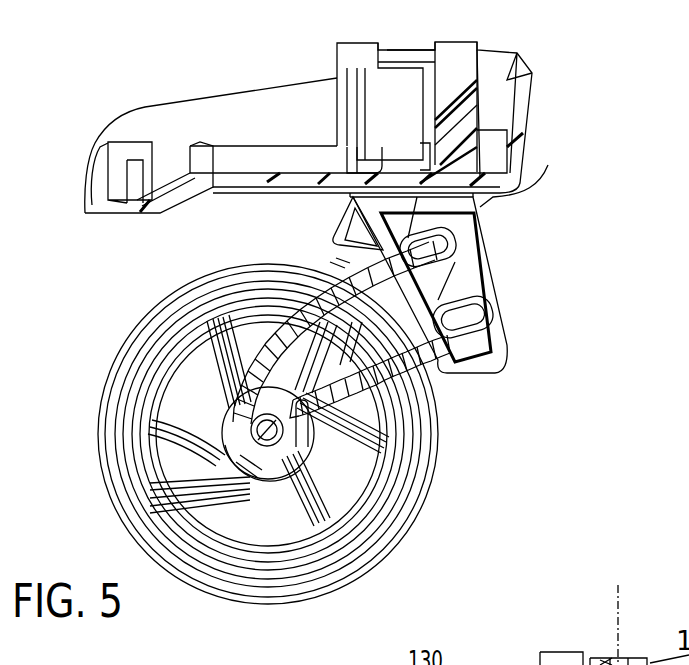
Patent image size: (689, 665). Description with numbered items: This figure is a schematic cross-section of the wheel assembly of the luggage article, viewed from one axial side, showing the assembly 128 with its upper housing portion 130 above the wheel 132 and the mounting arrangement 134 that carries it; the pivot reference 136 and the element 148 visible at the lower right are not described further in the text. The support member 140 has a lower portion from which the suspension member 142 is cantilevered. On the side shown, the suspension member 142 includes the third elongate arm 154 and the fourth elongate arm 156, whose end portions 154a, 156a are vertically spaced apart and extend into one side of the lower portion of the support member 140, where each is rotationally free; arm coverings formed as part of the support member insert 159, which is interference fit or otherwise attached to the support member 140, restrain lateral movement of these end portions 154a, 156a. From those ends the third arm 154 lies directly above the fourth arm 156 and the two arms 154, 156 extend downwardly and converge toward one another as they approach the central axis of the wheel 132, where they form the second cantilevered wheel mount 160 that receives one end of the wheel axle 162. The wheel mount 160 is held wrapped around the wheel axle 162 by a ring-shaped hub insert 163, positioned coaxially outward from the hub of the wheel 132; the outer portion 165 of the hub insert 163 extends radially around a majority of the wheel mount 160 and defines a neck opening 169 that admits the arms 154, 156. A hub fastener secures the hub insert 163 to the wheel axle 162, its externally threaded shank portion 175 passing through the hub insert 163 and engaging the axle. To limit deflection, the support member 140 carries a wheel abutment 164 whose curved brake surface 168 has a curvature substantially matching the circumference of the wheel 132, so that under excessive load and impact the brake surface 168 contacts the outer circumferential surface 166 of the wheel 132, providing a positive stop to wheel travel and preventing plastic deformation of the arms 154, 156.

The caster assembly 128 is at (337, 326).
The housing 130 is at (228, 103).
The wheel 132 is at (260, 444).
The fork assembly 134 is at (458, 254).
The pivot axis 136 is at (618, 617).
The support member 140 is at (490, 228).
The suspension member 142 is at (268, 327).
The fastener 148 is at (633, 663).
The third elongate arm 154 is at (272, 397).
The end portion of the third arm 154a is at (458, 255).
The fourth elongate arm 156 is at (397, 380).
The end portion of the fourth arm 156a is at (480, 320).
The support member insert 159 is at (524, 171).
The second cantilevered wheel mount 160 is at (262, 462).
The wheel axle 162 is at (300, 432).
The hub insert 163 is at (240, 462).
The wheel abutment 164 is at (348, 222).
The outer portion of the hub insert 165 is at (313, 433).
The circumferential surface of the wheel 166 is at (148, 315).
The curved brake surface 168 is at (335, 262).
The neck opening 169 is at (280, 395).
The shank portion 175 is at (170, 483).